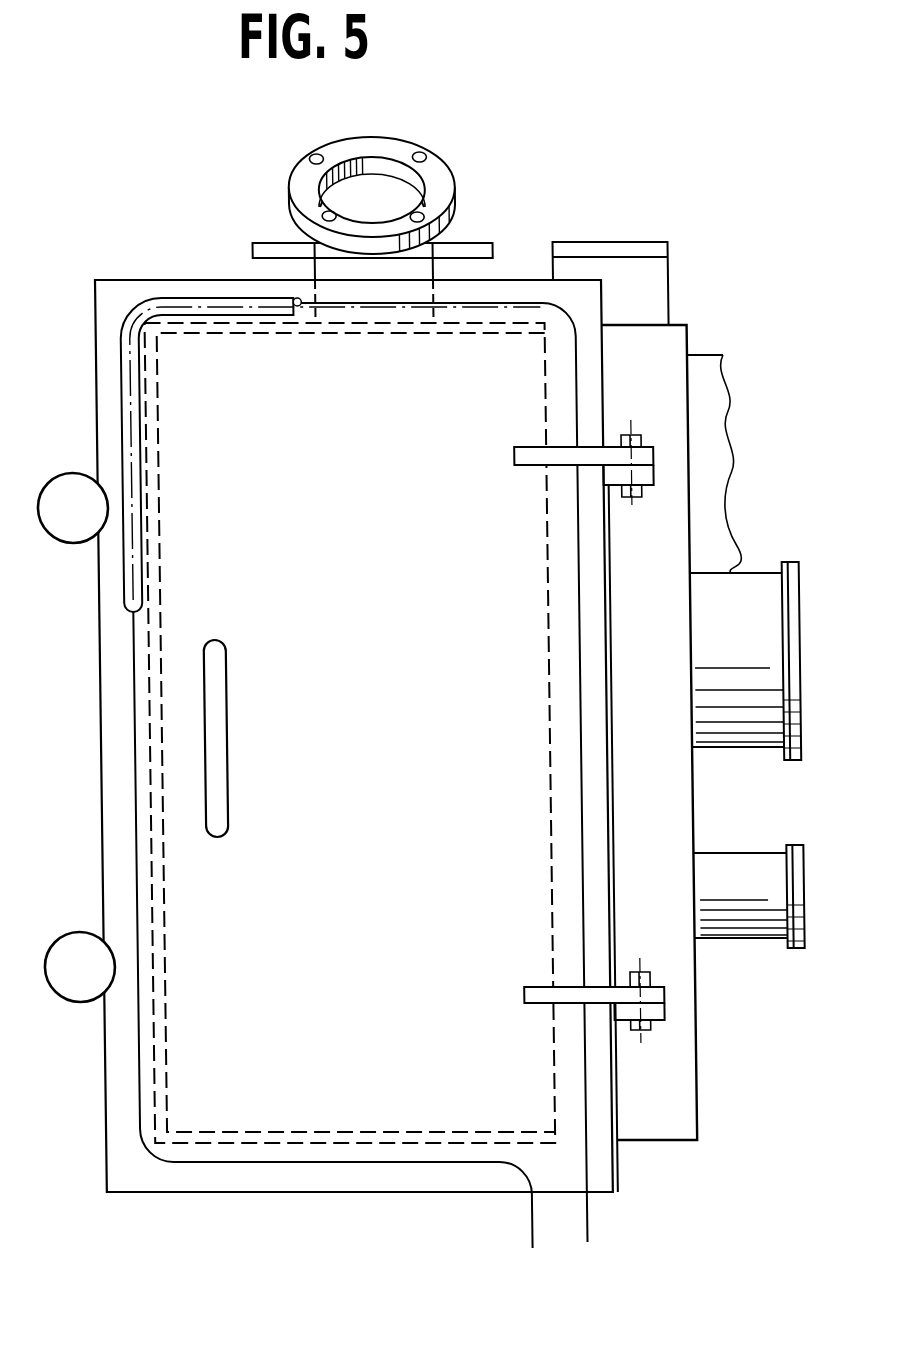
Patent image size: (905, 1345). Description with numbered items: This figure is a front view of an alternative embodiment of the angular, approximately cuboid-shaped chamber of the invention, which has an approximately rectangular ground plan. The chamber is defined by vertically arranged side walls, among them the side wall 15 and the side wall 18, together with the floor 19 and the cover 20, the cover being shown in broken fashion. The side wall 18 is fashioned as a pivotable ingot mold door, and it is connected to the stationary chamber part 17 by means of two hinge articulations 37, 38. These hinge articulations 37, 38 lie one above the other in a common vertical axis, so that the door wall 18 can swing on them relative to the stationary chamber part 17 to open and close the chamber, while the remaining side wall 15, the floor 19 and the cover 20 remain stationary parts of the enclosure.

The side wall 15 is at (95, 744).
The stationary chamber part 17 is at (686, 803).
The side wall fashioned as a pivotable ingot mold door 18 is at (357, 504).
The floor 19 is at (450, 1195).
The cover 20 is at (208, 279).
The hinge articulation 37 is at (636, 433).
The hinge articulation 38 is at (640, 1027).